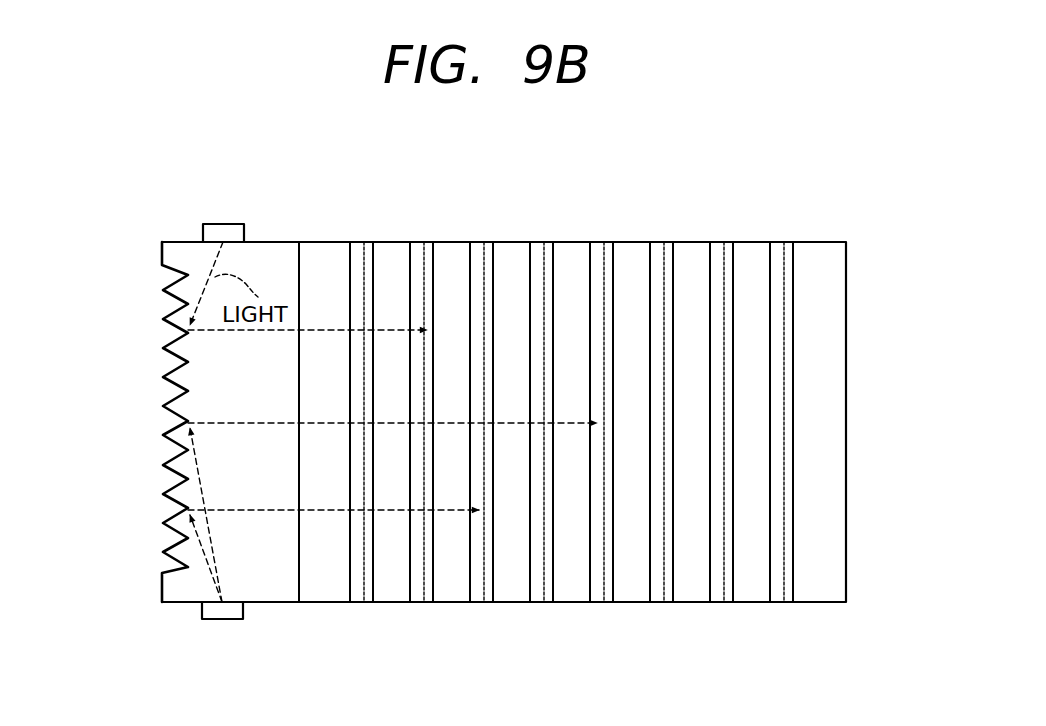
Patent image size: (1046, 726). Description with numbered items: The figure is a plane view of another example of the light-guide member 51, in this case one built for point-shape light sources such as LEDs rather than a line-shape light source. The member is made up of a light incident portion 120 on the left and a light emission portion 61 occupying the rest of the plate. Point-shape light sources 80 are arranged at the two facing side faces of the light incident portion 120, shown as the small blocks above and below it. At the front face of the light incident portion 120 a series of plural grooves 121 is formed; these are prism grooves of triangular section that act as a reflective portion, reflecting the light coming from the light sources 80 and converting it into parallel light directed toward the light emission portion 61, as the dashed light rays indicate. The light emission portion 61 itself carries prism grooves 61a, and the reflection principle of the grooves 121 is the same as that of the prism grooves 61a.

The light-guide member 51 is at (864, 290).
The light emission portion 61 is at (813, 245).
The prism grooves 61a is at (417, 242).
The light sources 80 is at (220, 224).
The light incident portion 120 is at (285, 242).
The grooves 121 is at (167, 305).